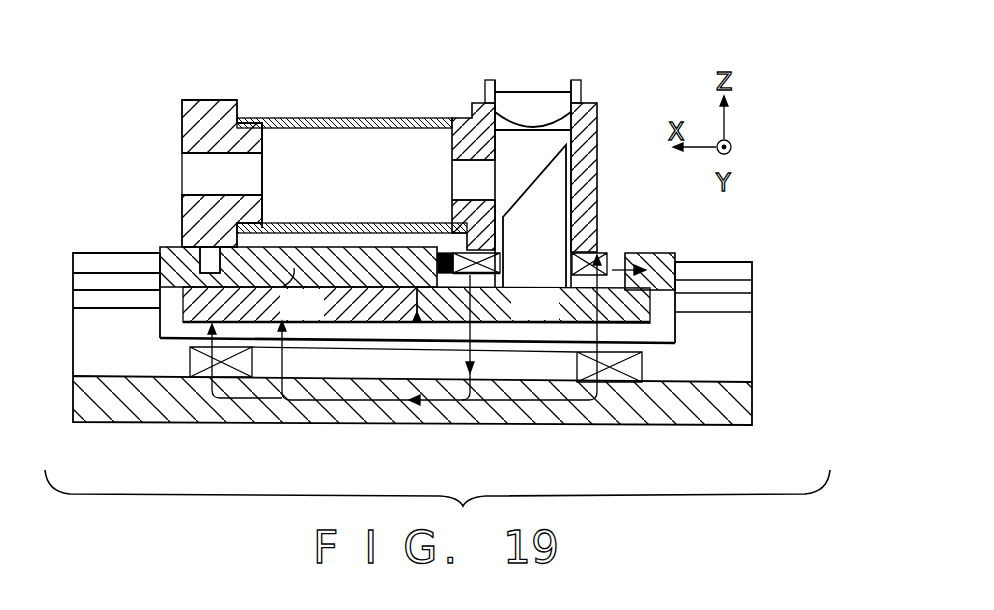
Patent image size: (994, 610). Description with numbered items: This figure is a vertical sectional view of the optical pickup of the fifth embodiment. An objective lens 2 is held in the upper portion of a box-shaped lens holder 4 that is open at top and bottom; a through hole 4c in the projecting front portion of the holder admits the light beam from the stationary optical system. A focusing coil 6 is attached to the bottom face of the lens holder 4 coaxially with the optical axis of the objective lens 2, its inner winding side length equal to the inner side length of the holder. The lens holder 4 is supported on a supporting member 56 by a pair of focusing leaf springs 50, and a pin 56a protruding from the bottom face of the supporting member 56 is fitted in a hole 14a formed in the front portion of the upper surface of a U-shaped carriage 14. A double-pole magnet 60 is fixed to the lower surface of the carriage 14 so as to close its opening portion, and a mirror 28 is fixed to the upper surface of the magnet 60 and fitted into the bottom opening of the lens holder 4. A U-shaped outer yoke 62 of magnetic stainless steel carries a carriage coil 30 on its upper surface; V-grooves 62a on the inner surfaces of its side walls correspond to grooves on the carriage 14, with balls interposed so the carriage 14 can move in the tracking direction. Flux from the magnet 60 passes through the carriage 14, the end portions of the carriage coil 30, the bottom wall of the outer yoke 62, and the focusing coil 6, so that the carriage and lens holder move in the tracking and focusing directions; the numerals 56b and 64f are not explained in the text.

The objective lens 2 is at (527, 92).
The lens holder 4 is at (590, 122).
The through hole 4c is at (453, 181).
The focusing coil 6 is at (599, 250).
The carriage 14 is at (722, 254).
The hole 14a is at (205, 258).
The mirror 28 is at (552, 187).
The carriage coil 30 is at (643, 362).
The focusing leaf springs 50 is at (365, 130).
The supporting member 56 is at (182, 120).
The pin 56a is at (207, 258).
The cylindrical wall of outer yoke 56b is at (258, 177).
The double-pole magnet 60 is at (653, 313).
The outer yoke 62 is at (818, 351).
The V-grooves 62a is at (753, 290).
The force direction arrow 64f is at (622, 262).